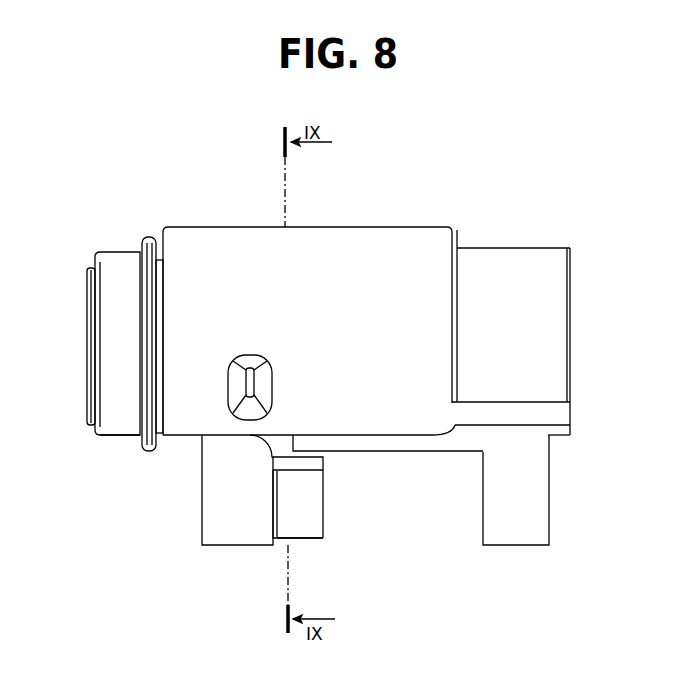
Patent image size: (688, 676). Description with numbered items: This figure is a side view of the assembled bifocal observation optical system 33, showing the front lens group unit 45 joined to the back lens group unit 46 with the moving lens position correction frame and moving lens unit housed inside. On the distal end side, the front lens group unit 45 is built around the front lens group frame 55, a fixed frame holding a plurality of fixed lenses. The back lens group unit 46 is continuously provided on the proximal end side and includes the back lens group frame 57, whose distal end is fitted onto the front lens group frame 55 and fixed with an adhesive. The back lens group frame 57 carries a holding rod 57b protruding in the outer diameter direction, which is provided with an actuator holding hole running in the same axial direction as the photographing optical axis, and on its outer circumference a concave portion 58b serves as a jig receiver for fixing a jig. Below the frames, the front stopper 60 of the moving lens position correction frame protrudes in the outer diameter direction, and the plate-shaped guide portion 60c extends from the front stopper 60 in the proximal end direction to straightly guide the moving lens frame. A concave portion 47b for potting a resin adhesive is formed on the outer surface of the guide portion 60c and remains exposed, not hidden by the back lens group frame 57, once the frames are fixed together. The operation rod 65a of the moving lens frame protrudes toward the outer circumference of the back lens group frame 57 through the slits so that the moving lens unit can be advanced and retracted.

The bifocal observation optical system 33 is at (86, 292).
The front lens group unit 45 is at (120, 239).
The back lens group unit 46 is at (241, 223).
The concave portion 47b is at (283, 448).
The front lens group frame 55 is at (115, 436).
The back lens group frame 57 is at (356, 226).
The holding rod 57b is at (515, 547).
The concave portion 58b is at (251, 354).
The front stopper 60 is at (235, 546).
The guide portion 60c is at (290, 472).
The operation rod 65a is at (312, 539).